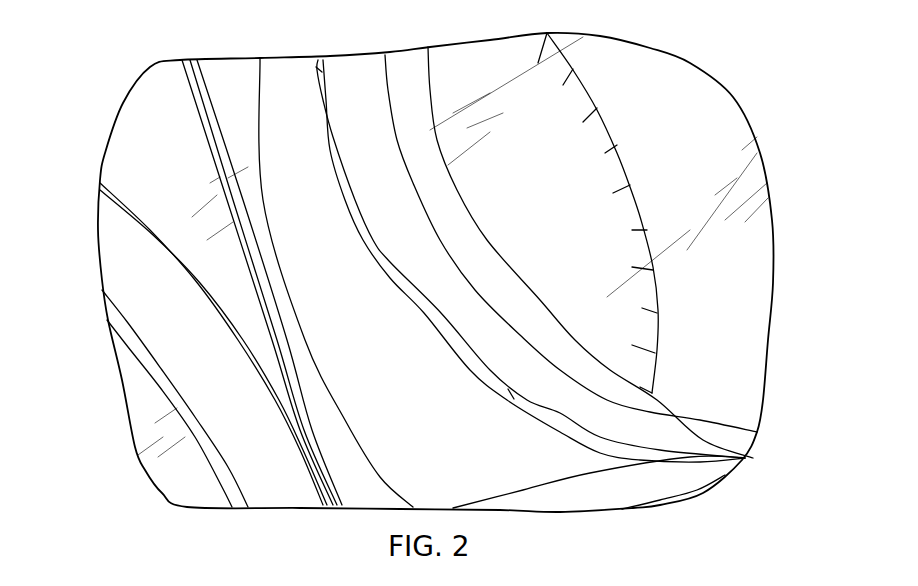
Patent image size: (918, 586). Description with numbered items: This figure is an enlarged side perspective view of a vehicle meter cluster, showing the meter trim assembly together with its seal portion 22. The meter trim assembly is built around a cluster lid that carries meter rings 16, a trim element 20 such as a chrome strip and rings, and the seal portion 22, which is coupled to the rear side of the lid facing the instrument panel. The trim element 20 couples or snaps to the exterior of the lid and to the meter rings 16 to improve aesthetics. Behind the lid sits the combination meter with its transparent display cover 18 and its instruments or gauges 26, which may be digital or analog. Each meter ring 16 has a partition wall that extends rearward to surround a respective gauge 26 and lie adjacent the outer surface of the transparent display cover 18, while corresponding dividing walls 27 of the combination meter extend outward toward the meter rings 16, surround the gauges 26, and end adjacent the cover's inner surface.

The meter ring 16 is at (393, 223).
The transparent display cover 18 is at (225, 87).
The trim element 20 is at (470, 250).
The seal portion 22 is at (424, 313).
The gauge 26 is at (573, 143).
The dividing wall 27 is at (351, 85).